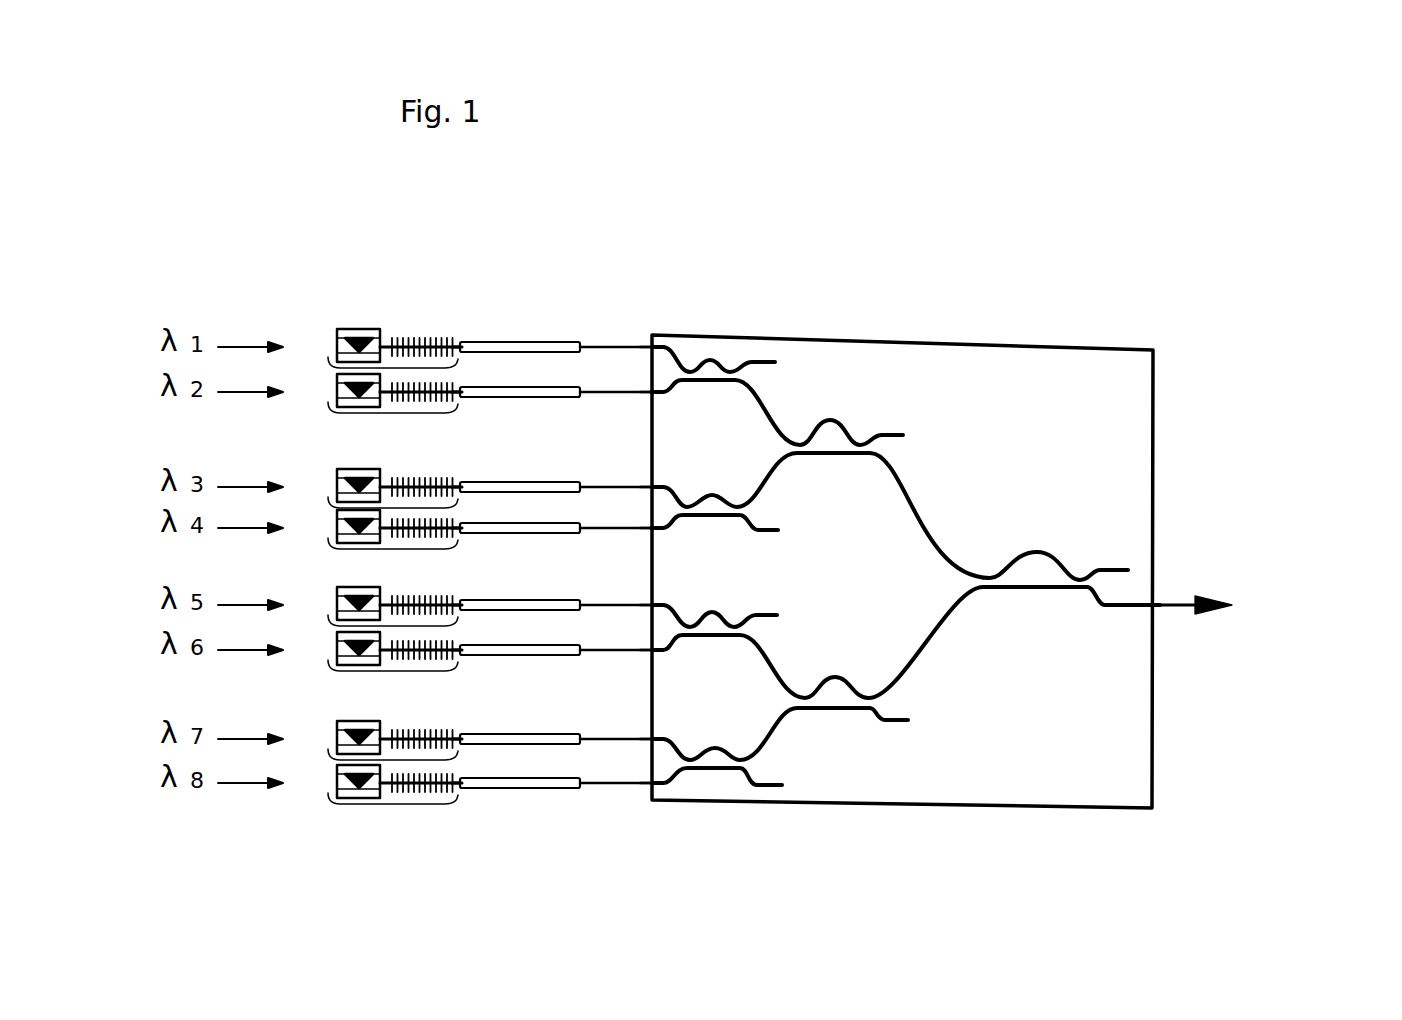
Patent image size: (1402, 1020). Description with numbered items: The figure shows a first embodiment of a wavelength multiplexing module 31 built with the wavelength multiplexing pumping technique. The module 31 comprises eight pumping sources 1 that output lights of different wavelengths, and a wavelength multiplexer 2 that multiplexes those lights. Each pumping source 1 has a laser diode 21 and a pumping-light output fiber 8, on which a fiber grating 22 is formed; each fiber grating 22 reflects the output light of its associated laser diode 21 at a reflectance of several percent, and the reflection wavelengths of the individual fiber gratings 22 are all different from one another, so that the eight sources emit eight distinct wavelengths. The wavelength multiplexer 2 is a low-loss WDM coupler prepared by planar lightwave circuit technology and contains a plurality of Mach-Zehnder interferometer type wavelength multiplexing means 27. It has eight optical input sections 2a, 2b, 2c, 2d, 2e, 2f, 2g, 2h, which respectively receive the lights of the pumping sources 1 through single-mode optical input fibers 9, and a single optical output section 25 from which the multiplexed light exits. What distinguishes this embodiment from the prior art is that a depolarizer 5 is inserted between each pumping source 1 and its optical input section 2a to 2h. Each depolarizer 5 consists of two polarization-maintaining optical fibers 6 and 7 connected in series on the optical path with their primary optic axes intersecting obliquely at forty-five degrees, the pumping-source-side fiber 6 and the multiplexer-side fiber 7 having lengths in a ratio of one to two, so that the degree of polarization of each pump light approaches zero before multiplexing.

The pumping source 1 is at (388, 820).
The wavelength multiplexer 2 is at (849, 349).
The optical input section 2a is at (647, 343).
The optical input section 2b is at (640, 400).
The optical input section 2c is at (644, 486).
The optical input section 2d is at (640, 532).
The optical input section 2e is at (655, 602).
The optical input section 2f is at (640, 654).
The optical input section 2g is at (655, 737).
The optical input section 2h is at (643, 787).
The depolarizer 5 is at (524, 342).
The polarization-maintaining optical fiber 6 is at (488, 342).
The polarization-maintaining optical fiber 7 is at (556, 342).
The pumping-light output fiber 8 is at (455, 342).
The optical input fiber 9 is at (598, 345).
The laser diode 21 is at (363, 328).
The fiber grating 22 is at (417, 338).
The optical output section 25 is at (1163, 610).
The wavelength multiplexing means 27 is at (722, 345).
The wavelength multiplexing module 31 is at (689, 235).